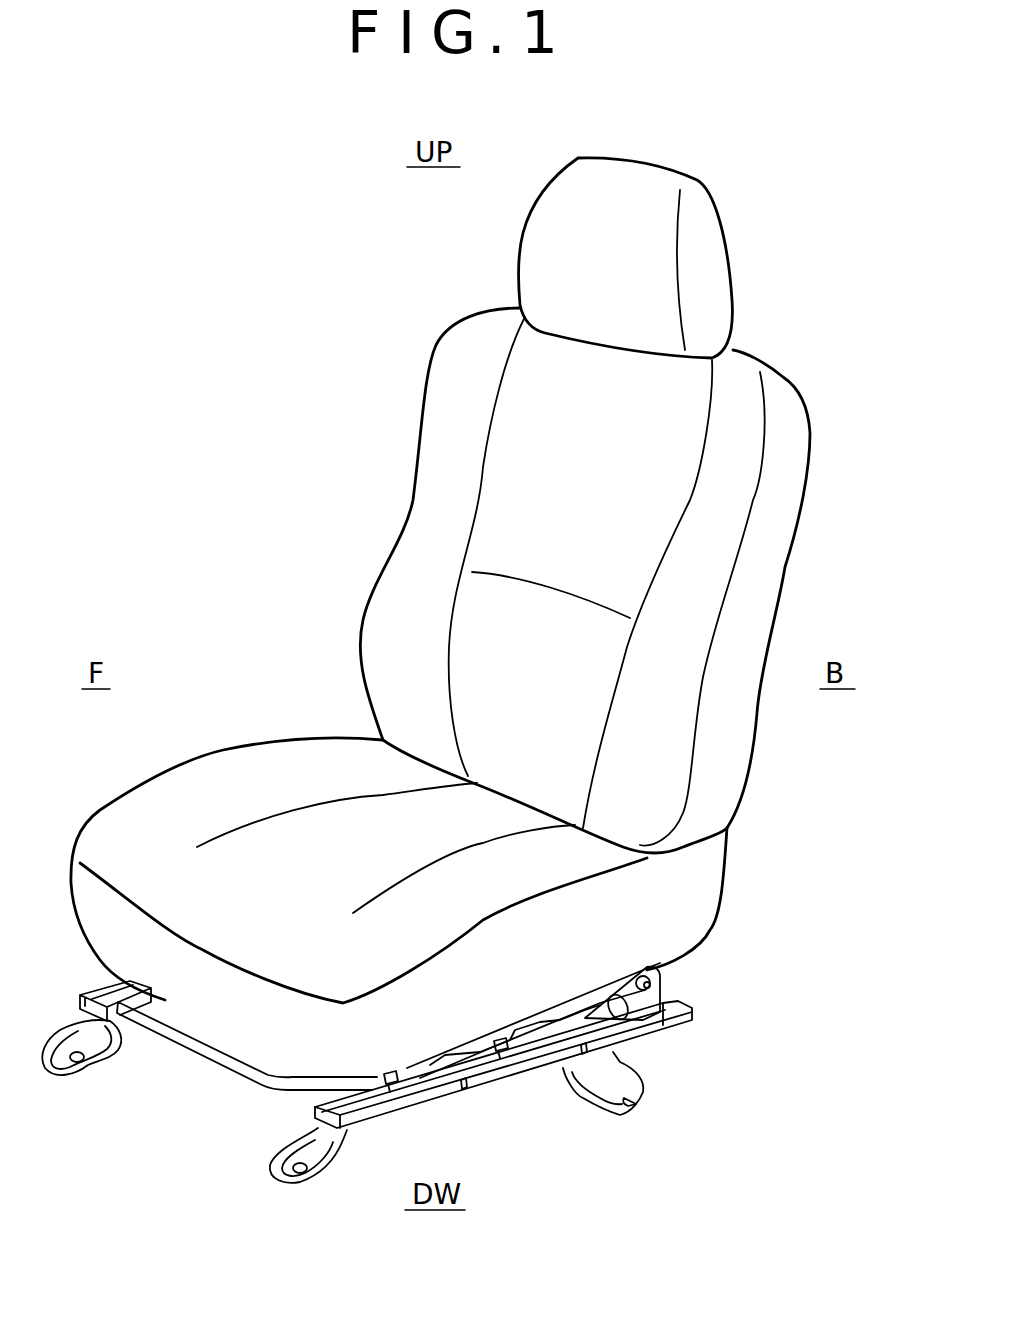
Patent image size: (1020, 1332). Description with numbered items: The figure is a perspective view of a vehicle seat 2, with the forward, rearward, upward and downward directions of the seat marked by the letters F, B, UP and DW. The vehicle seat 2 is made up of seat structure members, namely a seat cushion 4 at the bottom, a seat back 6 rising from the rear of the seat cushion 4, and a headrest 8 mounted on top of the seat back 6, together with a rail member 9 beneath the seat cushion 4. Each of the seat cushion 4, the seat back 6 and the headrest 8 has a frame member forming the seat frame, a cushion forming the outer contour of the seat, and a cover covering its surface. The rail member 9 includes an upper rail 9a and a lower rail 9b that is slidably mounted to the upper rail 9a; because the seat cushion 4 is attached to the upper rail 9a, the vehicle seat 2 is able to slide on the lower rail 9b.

The vehicle seat 2 is at (778, 294).
The headrest 8 is at (517, 270).
The seat back 6 is at (402, 532).
The seat cushion 4 is at (275, 738).
The rail member 9 is at (773, 957).
The upper rail 9a is at (673, 1002).
The lower rail 9b is at (693, 1027).